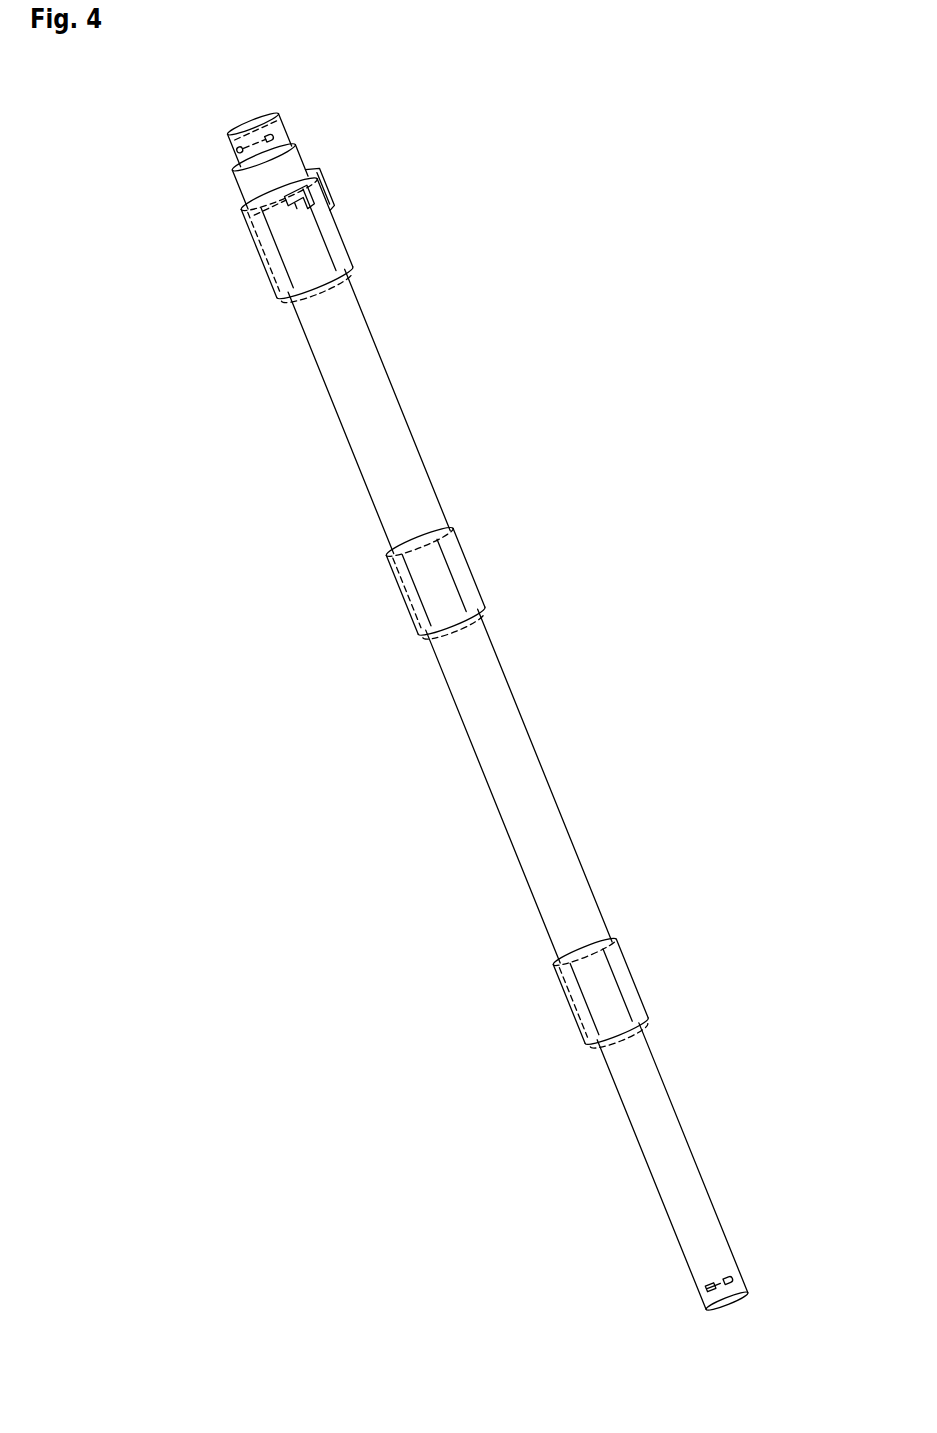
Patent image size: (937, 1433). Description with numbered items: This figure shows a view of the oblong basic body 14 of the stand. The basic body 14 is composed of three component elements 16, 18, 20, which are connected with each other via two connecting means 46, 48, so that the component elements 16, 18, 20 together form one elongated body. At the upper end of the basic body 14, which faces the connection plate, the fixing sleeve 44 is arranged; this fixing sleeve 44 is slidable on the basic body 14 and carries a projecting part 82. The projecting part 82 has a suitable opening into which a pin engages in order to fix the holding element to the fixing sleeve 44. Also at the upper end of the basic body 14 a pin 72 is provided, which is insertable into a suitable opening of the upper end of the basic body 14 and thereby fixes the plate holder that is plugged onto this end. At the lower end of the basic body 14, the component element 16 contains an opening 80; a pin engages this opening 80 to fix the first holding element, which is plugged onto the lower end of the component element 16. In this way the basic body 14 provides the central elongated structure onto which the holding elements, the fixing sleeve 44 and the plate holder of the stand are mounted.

The oblong basic body 14 is at (720, 326).
The component element 16 is at (665, 1145).
The component element 18 is at (522, 773).
The component element 20 is at (375, 400).
The fixing sleeve 44 is at (267, 252).
The connecting means 46 is at (407, 602).
The connecting means 48 is at (577, 1010).
The pin 72 is at (247, 145).
The opening 80 is at (708, 1285).
The projecting part 82 is at (307, 177).